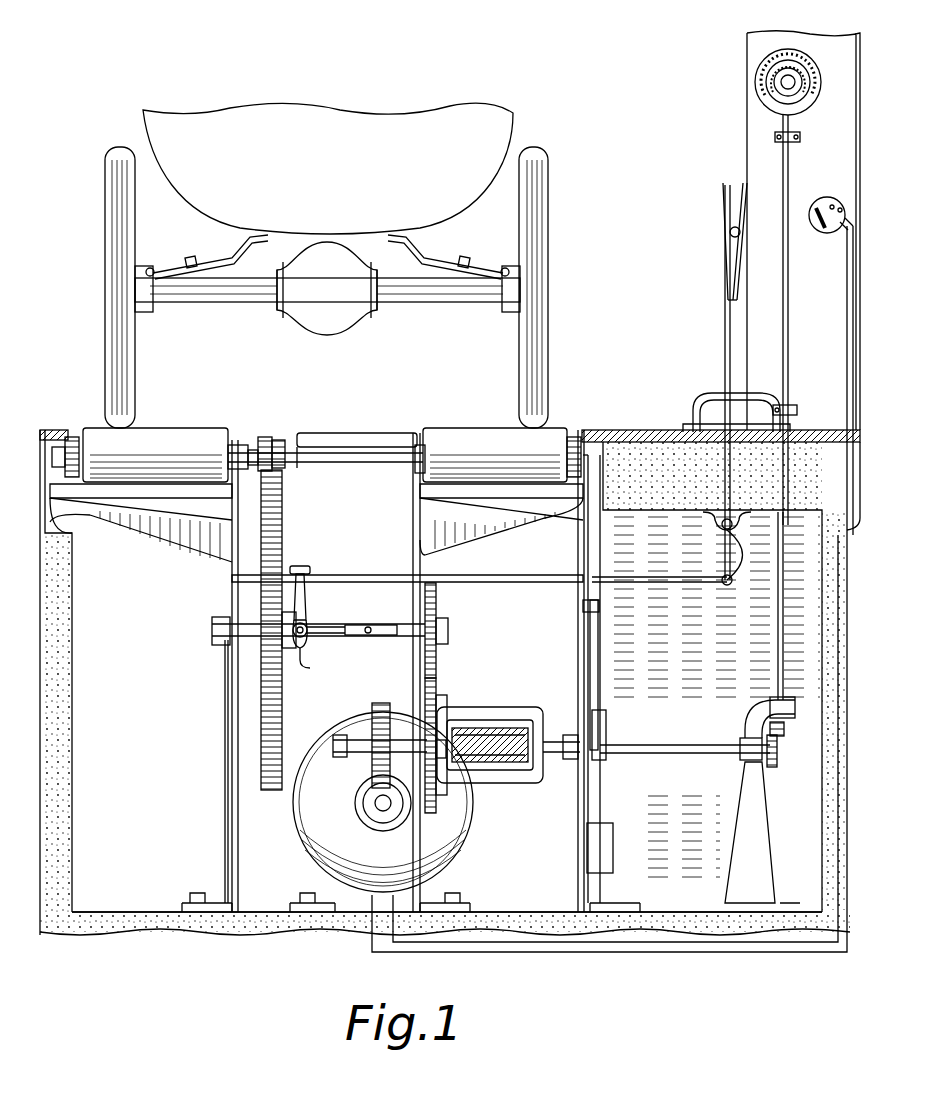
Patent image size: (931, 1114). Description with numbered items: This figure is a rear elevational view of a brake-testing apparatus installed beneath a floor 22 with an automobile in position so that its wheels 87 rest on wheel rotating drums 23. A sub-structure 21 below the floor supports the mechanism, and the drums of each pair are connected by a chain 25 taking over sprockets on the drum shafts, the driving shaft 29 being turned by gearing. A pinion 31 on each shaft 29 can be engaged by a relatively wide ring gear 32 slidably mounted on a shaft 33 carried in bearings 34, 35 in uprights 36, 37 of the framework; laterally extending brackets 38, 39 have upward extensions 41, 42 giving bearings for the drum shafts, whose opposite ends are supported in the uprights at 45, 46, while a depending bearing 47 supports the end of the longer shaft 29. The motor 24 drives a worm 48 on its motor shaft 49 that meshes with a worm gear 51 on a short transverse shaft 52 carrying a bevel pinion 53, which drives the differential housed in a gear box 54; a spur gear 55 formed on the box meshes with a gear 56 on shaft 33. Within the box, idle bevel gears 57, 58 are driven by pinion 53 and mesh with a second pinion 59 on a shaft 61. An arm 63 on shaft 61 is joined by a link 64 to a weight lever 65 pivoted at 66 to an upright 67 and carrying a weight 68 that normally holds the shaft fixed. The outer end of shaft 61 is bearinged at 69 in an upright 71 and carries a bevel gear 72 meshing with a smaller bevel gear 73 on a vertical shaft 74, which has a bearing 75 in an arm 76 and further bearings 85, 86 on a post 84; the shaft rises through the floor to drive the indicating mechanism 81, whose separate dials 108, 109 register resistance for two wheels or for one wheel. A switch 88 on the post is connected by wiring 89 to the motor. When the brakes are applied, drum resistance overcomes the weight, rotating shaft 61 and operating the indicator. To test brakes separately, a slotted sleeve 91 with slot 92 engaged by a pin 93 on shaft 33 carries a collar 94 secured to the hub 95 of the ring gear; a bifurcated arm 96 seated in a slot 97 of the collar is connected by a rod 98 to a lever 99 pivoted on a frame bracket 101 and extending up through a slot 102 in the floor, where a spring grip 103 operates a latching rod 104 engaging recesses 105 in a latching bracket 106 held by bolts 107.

The sub-structure 21 is at (493, 908).
The floor 22 is at (603, 430).
The wheel rotating drums 23 is at (470, 428).
The motor 24 is at (318, 735).
The chain 25 is at (575, 434).
The driving shaft 29 is at (345, 463).
The pinions 31 is at (282, 432).
The ring gear 32 is at (283, 525).
The shaft 33 is at (252, 640).
The bearing 34 is at (218, 646).
The bearing 35 is at (425, 645).
The upright 36 is at (225, 756).
The upright 37 is at (412, 551).
The bracket 38 is at (160, 528).
The bracket 39 is at (508, 522).
The upward extension 41 is at (55, 428).
The upward extension 42 is at (640, 430).
The shaft support 45 is at (248, 440).
The shaft support 46 is at (419, 440).
The depending bearing 47 is at (305, 441).
The worm 48 is at (385, 825).
The motor shaft 49 is at (378, 812).
The worm gear 51 is at (375, 705).
The transverse shaft 52 is at (355, 758).
The bevel pinion 53 is at (470, 710).
The gear box 54 is at (440, 705).
The spur gear 55 is at (440, 685).
The gear 56 is at (437, 606).
The idle bevel gear 57 is at (525, 720).
The idle bevel gear 58 is at (515, 770).
The second pinion 59 is at (553, 742).
The shaft 61 is at (563, 760).
The arm 63 is at (606, 726).
The link 64 is at (600, 668).
The weight lever 65 is at (603, 782).
The pivot 66 is at (583, 608).
The upright 67 is at (583, 560).
The weight 68 is at (613, 850).
The bearing 69 is at (745, 755).
The upright 71 is at (768, 800).
The bevel gear 72 is at (778, 758).
The bevel gear 73 is at (784, 732).
The vertical shaft 74 is at (780, 600).
The bearing 75 is at (790, 700).
The arm 76 is at (752, 710).
The indicating mechanism 81 is at (788, 52).
The post 84 is at (748, 53).
The bearing 85 is at (795, 406).
The bearing 86 is at (775, 140).
The wheels 87 is at (128, 372).
The switch 88 is at (815, 233).
The wiring 89 is at (768, 952).
The sleeve 91 is at (330, 628).
The slot 92 is at (375, 626).
The pin 93 is at (366, 634).
The collar 94 is at (306, 622).
The hub 95 is at (288, 650).
The bifurcated arm 96 is at (305, 578).
The slot 97 is at (314, 661).
The rod 98 is at (463, 575).
The lever 99 is at (725, 336).
The frame bracket 101 is at (727, 586).
The slot 102 is at (726, 440).
The spring grip 103 is at (735, 205).
The latching rod 104 is at (735, 278).
The recesses 105 is at (705, 395).
The latching bracket 106 is at (785, 325).
The bolts 107 is at (680, 450).
The dial 108 is at (810, 60).
The dial 109 is at (768, 96).